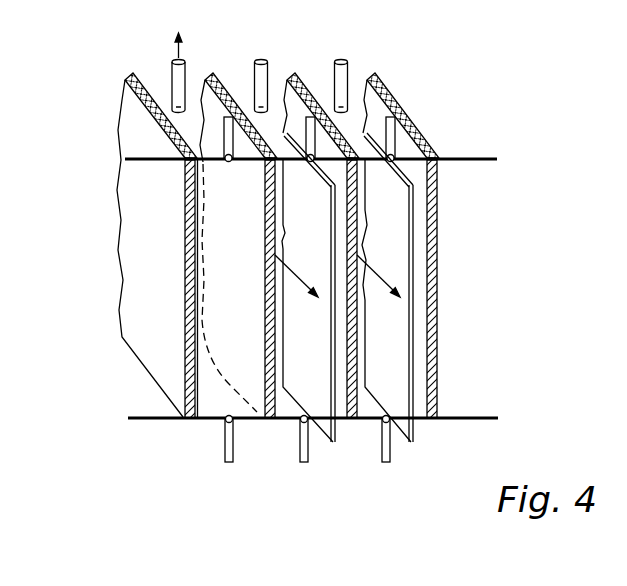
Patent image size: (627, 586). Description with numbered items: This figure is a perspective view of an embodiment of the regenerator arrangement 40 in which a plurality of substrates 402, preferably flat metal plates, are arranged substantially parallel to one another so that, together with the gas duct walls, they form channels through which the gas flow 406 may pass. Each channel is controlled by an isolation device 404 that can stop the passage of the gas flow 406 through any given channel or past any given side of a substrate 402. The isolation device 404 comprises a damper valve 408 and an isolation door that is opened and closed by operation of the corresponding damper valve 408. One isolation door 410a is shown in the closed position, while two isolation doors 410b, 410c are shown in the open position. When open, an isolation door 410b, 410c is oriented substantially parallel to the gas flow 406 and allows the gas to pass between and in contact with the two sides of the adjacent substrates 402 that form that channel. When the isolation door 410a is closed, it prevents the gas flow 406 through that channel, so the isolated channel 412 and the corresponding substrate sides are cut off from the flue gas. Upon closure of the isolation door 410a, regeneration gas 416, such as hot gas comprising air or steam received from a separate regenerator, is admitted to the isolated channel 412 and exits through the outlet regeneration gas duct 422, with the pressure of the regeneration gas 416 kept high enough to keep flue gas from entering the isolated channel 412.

The conveyor frame / support rails 40 is at (473, 158).
The substrate 402 is at (272, 381).
The isolation device 404 is at (233, 107).
The gas flow 406 is at (378, 266).
The damper valve 408 is at (226, 158).
The isolation door 410a is at (232, 278).
The isolation door 410b is at (307, 388).
The isolation door 410c is at (398, 323).
The isolated channel 412 is at (160, 98).
The regeneration gas 416 is at (177, 55).
The outlet regeneration gas duct 422 is at (173, 82).